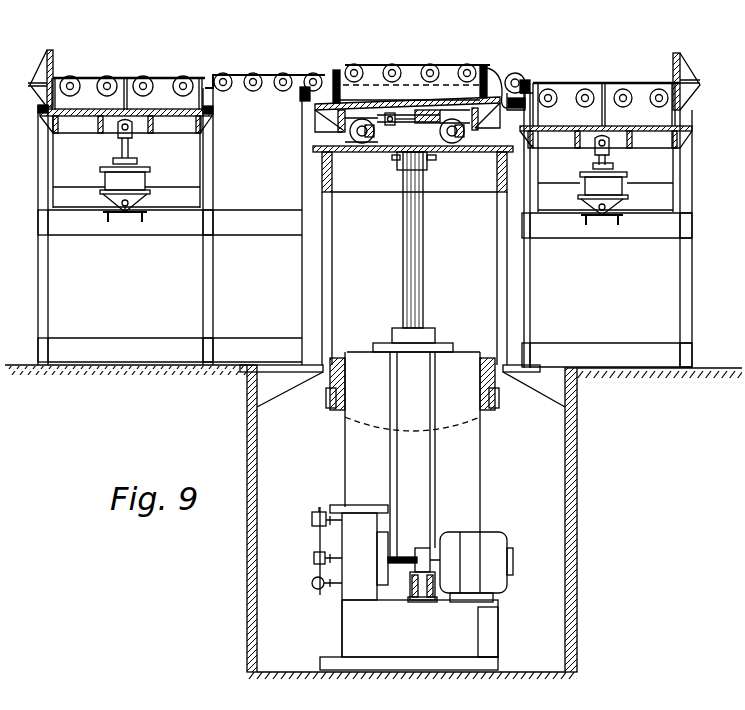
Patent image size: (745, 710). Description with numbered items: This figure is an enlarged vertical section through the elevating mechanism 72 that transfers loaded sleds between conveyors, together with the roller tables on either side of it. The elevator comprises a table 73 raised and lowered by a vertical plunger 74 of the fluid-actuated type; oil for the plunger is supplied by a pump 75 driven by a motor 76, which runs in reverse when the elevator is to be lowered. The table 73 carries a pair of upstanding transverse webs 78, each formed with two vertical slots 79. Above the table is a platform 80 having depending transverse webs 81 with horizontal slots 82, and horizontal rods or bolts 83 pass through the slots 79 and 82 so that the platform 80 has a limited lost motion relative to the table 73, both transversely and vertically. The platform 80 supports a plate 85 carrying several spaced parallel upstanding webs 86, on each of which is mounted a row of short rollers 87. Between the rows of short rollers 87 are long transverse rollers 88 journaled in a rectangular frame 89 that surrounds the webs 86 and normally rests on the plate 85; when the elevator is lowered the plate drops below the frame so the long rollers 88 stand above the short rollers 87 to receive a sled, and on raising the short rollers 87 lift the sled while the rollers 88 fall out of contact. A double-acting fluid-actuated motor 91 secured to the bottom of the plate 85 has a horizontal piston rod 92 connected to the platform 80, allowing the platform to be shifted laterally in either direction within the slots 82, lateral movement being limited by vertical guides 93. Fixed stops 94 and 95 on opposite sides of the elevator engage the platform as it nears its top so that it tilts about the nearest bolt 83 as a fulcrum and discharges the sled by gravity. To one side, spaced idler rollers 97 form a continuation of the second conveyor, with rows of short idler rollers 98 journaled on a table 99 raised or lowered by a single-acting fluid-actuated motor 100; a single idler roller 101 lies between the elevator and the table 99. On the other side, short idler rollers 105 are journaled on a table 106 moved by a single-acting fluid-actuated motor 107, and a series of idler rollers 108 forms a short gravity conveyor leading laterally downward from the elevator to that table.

The elevating mechanism 72 is at (466, 456).
The table 73 is at (368, 144).
The vertical plunger 74 is at (405, 248).
The pump 75 is at (389, 546).
The motor 76 is at (497, 536).
The upstanding transverse webs 78 is at (462, 142).
The vertical slots 79 is at (365, 118).
The platform 80 is at (342, 124).
The depending transverse webs 81 is at (345, 133).
The horizontal slots 82 is at (358, 142).
The horizontal rods or bolts 83 is at (457, 143).
The plate 85 is at (400, 100).
The upstanding webs 86 is at (448, 74).
The short rollers 87 is at (432, 68).
The long transverse rollers 88 is at (462, 64).
The rectangular frame 89 is at (490, 70).
The double-acting fluid-actuated motor 91 is at (447, 140).
The horizontal piston rod 92 is at (397, 128).
The vertical guides 93 is at (313, 297).
The fixed stop 94 is at (318, 104).
The fixed stop 95 is at (506, 85).
The spaced idler rollers 97 is at (635, 85).
The short idler rollers 98 is at (606, 88).
The table 99 is at (660, 135).
The single-acting fluid-actuated motor 100 is at (590, 182).
The single idler roller 101 is at (528, 72).
The short idler rollers 105 is at (143, 76).
The table 106 is at (165, 130).
The single-acting fluid-actuated motor 107 is at (110, 180).
The idler rollers 108 is at (255, 72).